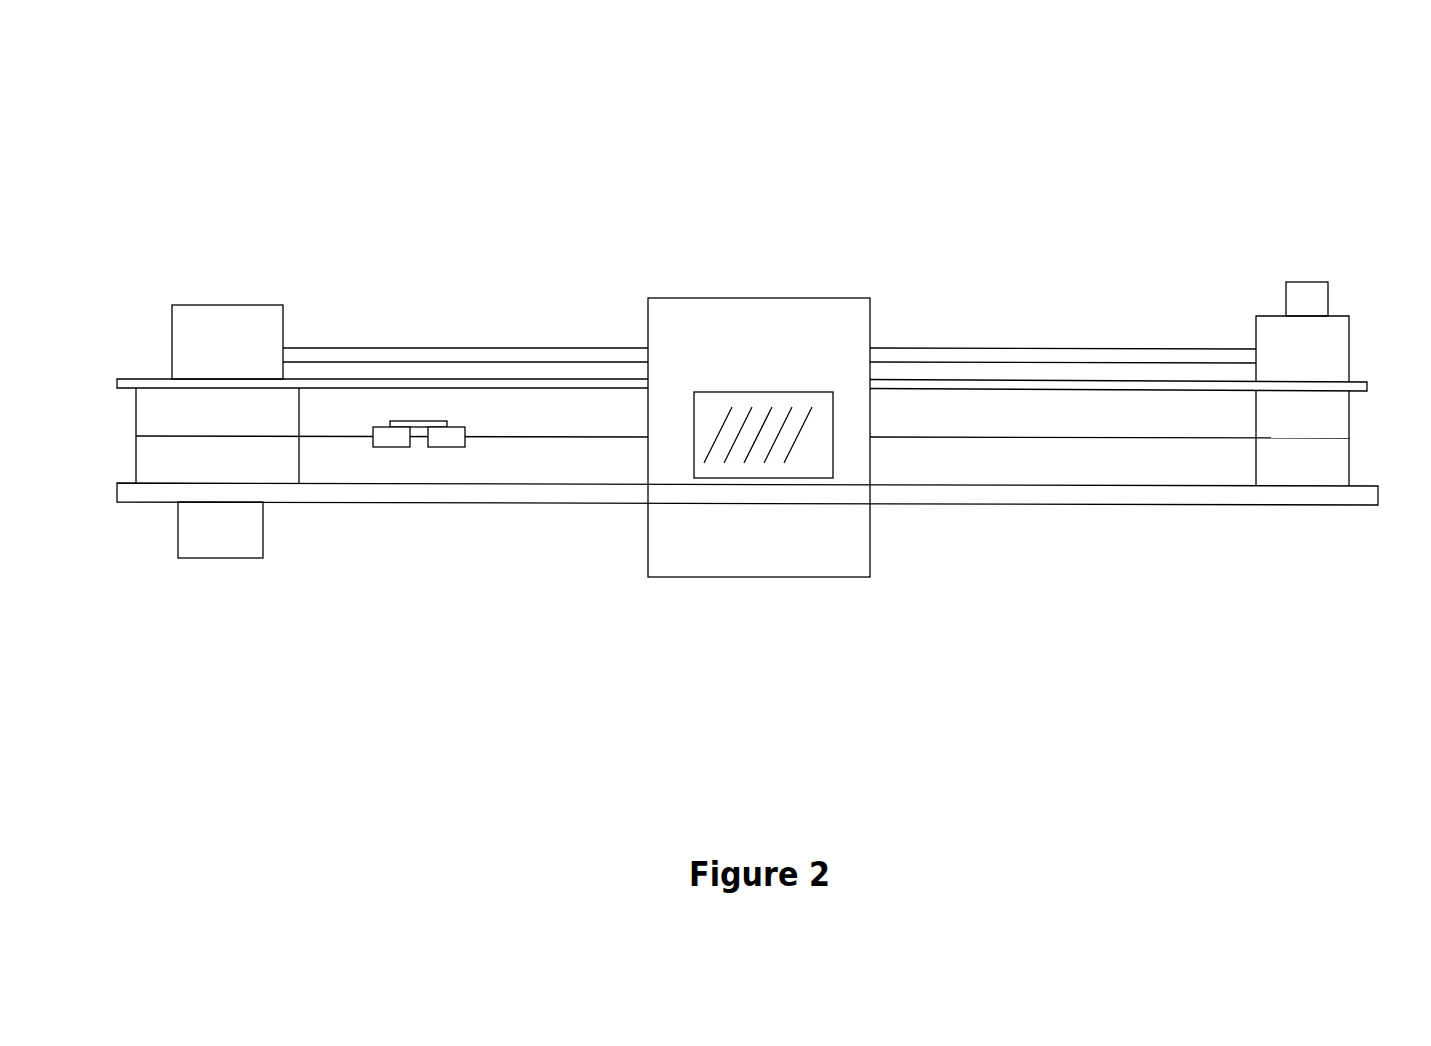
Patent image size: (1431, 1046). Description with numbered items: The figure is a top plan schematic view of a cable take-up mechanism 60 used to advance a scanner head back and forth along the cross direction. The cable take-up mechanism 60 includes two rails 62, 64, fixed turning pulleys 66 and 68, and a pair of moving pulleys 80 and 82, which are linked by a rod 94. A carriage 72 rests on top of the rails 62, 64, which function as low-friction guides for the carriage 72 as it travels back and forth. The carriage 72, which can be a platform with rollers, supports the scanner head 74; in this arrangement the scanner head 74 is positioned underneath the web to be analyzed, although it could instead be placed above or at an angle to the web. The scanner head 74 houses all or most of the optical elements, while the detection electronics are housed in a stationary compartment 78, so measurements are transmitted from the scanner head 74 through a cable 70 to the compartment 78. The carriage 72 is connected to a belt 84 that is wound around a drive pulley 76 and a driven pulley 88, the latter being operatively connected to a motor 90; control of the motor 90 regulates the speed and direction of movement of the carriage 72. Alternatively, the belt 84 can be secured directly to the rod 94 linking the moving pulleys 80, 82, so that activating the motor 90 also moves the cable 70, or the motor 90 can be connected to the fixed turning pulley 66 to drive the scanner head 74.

The cable take-up mechanism 60 is at (946, 194).
The rail 62 is at (147, 502).
The rail 64 is at (137, 380).
The fixed turning pulley 66 is at (1348, 460).
The fixed turning pulley 68 is at (155, 464).
The cable 70 is at (507, 437).
The carriage 72 is at (691, 298).
The scanner head 74 is at (750, 392).
The drive pulley 76 is at (1256, 337).
The stationary compartment 78 is at (220, 560).
The moving pulley 80 is at (448, 447).
The moving pulley 82 is at (388, 447).
The belt 84 is at (1018, 348).
The driven pulley 88 is at (228, 305).
The motor 90 is at (1307, 282).
The rod 94 is at (418, 421).